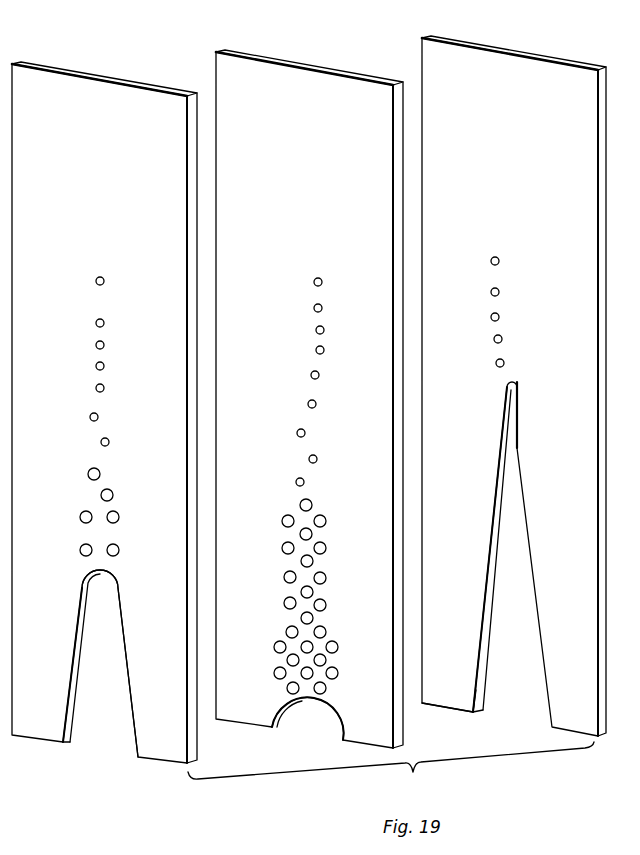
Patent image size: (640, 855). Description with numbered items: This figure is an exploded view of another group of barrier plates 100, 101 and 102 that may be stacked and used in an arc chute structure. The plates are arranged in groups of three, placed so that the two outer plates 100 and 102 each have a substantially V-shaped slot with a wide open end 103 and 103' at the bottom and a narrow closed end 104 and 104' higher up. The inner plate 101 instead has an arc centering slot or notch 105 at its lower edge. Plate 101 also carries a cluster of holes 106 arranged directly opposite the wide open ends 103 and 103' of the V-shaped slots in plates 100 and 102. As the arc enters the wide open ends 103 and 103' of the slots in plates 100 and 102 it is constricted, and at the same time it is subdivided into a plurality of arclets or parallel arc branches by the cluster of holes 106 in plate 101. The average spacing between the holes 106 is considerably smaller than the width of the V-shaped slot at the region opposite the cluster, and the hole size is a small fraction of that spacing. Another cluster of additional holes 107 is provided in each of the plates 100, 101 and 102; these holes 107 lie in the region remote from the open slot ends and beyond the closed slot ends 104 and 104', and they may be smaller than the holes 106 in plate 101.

The barrier plate 100 is at (130, 94).
The inner plate 101 is at (343, 79).
The barrier plate 102 is at (530, 65).
The wide open end 103 is at (78, 673).
The narrow closed end 104 is at (123, 663).
The arc centering slot or notch 105 is at (290, 720).
The cluster of holes 106 is at (113, 495).
The additional holes 107 is at (104, 346).
The narrow closed end 104' is at (520, 547).
The wide open end 103' is at (463, 715).